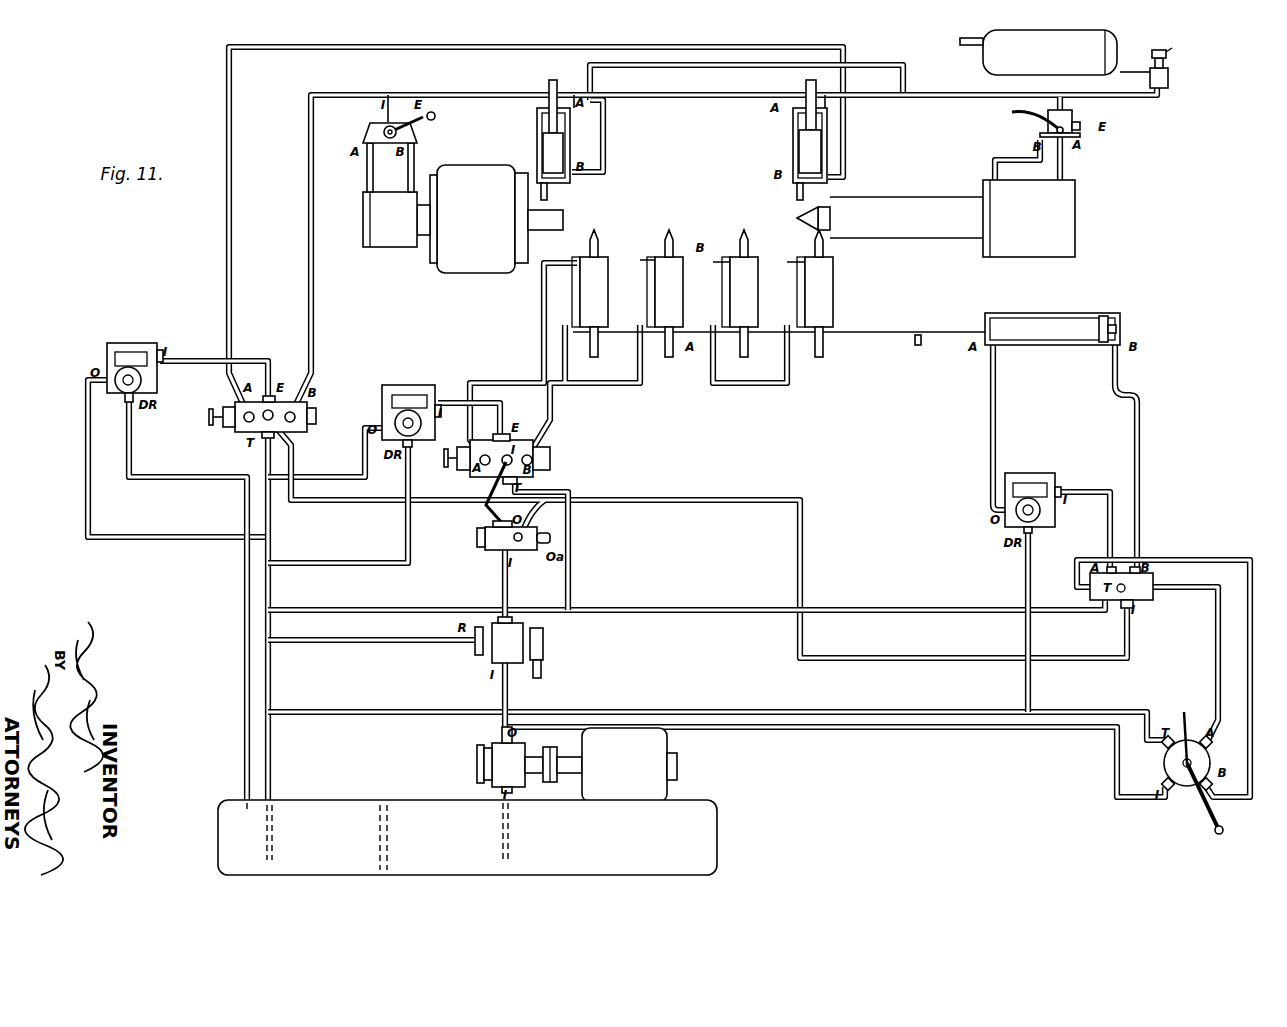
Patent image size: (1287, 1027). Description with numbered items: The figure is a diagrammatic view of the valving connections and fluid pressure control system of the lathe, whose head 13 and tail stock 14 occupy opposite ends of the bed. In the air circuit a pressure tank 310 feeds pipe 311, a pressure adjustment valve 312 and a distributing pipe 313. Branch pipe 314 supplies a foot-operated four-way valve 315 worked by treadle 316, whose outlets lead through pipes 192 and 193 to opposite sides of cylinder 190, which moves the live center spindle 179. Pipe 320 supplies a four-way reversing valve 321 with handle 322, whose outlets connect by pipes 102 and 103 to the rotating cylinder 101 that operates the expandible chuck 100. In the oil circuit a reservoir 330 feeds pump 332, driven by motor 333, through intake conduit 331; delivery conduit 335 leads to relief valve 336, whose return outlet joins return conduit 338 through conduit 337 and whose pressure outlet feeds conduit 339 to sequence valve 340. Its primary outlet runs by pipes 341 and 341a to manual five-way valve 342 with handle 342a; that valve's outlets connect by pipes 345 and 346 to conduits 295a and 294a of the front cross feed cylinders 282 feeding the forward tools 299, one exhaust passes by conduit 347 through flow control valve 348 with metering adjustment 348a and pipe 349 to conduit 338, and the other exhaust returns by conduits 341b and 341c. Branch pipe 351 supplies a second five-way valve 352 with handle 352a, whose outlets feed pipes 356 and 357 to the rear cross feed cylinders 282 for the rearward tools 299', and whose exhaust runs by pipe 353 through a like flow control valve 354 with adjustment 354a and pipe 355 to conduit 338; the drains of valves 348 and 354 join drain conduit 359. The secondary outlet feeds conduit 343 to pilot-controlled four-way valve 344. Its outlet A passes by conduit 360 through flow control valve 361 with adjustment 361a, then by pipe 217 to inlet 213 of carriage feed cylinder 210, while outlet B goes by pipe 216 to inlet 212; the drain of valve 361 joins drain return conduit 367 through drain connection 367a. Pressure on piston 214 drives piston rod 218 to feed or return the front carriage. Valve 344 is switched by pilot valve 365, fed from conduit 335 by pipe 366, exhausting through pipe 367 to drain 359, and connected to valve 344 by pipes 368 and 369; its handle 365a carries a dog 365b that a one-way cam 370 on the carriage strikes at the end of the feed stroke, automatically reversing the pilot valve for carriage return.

The lathe head 13 is at (479, 219).
The tail stock 14 is at (935, 230).
The expandible chuck 100 is at (560, 220).
The double acting rotating pressure cylinder 101 is at (393, 240).
The pipe 102 is at (367, 178).
The pipe 103 is at (422, 205).
The live center spindle 179 is at (832, 216).
The cylinder 190 is at (1048, 212).
The pipe 192 is at (1014, 161).
The pipe 193 is at (1063, 175).
The double acting pressure cylinder 210 is at (1055, 313).
The inlet conduit 212 is at (1100, 343).
The inlet conduit 213 is at (1005, 345).
The piston 214 is at (1110, 320).
The pipe 216 is at (1140, 447).
The pipe 217 is at (991, 447).
The piston rod 218 is at (945, 340).
The cylinder chamber 282 is at (537, 148).
The piping 294a is at (605, 138).
The piping 295a is at (597, 92).
The forward cutting tools 299 is at (708, 218).
The rearward cutting tools 299' is at (573, 192).
The pressure tank 310 is at (1100, 42).
The pipe 311 is at (1167, 52).
The pressure adjustment valve 312 is at (1170, 80).
The distributing pipe 313 is at (968, 98).
The branch conductor pipe 314 is at (1072, 112).
The foot-operated air control valve 315 is at (1080, 140).
The foot treadle 316 is at (1020, 115).
The pipe 320 is at (700, 62).
The four-way reversing air control valve 321 is at (372, 122).
The manipulating handle 322 is at (435, 117).
The fluid reservoir 330 is at (717, 820).
The pump intake conduit 331 is at (510, 830).
The pump 332 is at (492, 763).
The pump motor 333 is at (629, 765).
The delivery conduit 335 is at (508, 692).
The adjustable pressure relief valve 336 is at (525, 636).
The conduit 337 is at (402, 643).
The return conduit 338 is at (272, 515).
The conduit 339 is at (507, 584).
The adjustable pressure sequence valve 340 is at (495, 540).
The pipe 341 is at (488, 510).
The pipe 341a is at (515, 503).
The conduit 341b is at (572, 578).
The conduit 341c is at (686, 599).
The five-way manually-operated valve 342 is at (552, 459).
The control handle 342a is at (446, 467).
The conduit 343 is at (668, 502).
The pilot-controlled four-way reversing valve 344 is at (1145, 600).
The pipe 345 is at (512, 383).
The pipe 346 is at (542, 315).
The conduit 347 is at (450, 400).
The adjustable flow control valve 348 is at (405, 385).
The metering adjustment 348a is at (400, 420).
The pipe 349 is at (364, 465).
The branch pressure conduit 351 is at (392, 508).
The second five-way valve 352 is at (300, 428).
The manipulating handle 352a is at (210, 420).
The pipe 353 is at (242, 360).
The flow control valve 354 is at (107, 350).
The handwheel 354a is at (118, 392).
The pipe 355 is at (88, 480).
The pipe 356 is at (410, 47).
The pipe 357 is at (310, 278).
The return drain flow conduit 359 is at (246, 618).
The conduit 360 is at (1095, 491).
The adjustable flow control valve 361 is at (1014, 473).
The adjustment 361a is at (1032, 505).
The pilot valve 365 is at (1172, 790).
The operating handle 365a is at (1218, 820).
The dog 365b is at (1185, 710).
The pipe 366 is at (966, 729).
The pipe 367 is at (422, 711).
The drain pipe 367a is at (1026, 583).
The pipe 368 is at (1216, 660).
The pipe 369 is at (1230, 559).
The cam 370 is at (910, 345).